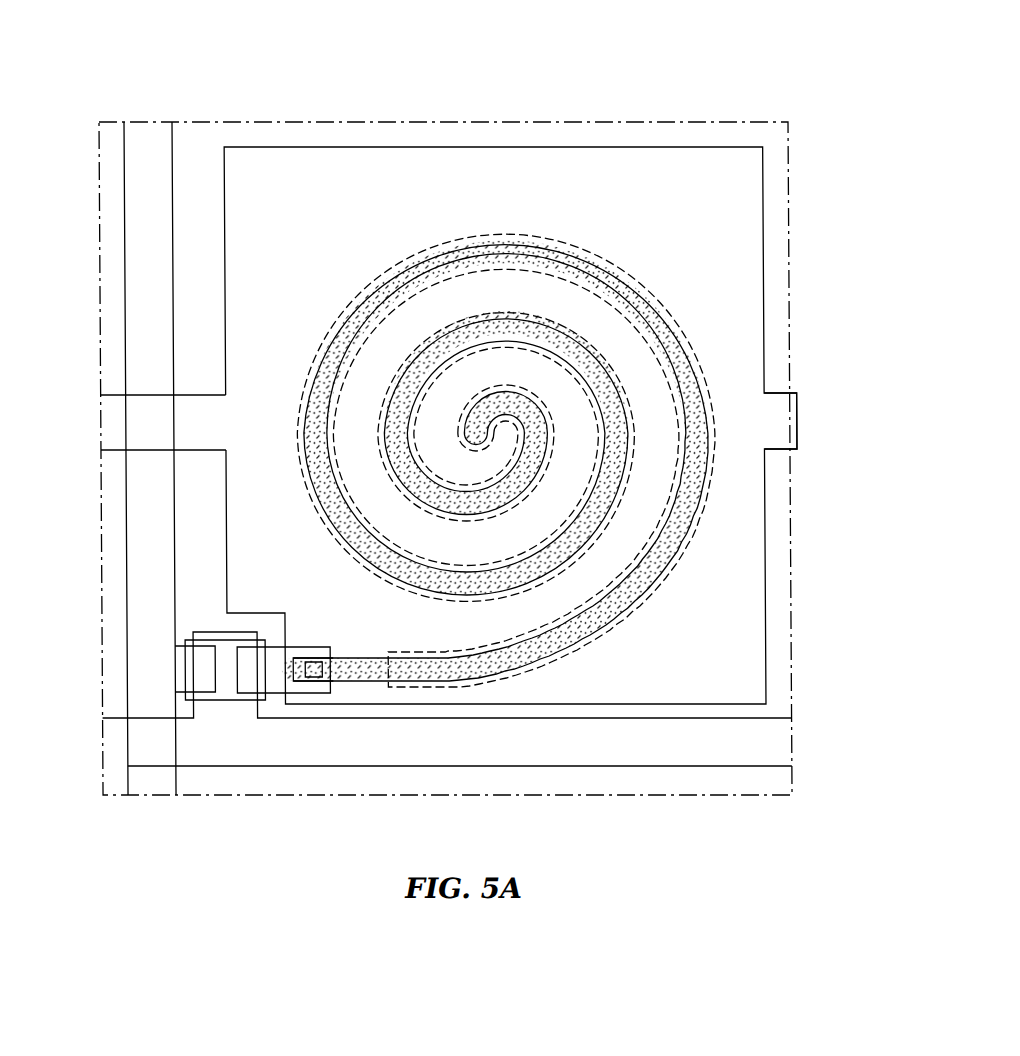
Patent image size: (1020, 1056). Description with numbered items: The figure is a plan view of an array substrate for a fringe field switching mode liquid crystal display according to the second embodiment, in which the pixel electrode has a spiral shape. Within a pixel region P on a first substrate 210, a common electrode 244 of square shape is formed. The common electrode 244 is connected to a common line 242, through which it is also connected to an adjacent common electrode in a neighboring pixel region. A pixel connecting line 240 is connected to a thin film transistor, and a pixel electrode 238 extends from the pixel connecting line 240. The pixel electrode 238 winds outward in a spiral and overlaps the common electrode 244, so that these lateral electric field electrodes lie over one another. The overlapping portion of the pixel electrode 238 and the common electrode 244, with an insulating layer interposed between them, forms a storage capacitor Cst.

The first substrate 210 is at (688, 122).
The common electrode 244 is at (300, 173).
The pixel electrode 238 is at (642, 305).
The common line 242 is at (795, 393).
The storage capacitor Cst is at (702, 545).
The pixel connecting line 240 is at (358, 673).
The pixel region P is at (193, 262).